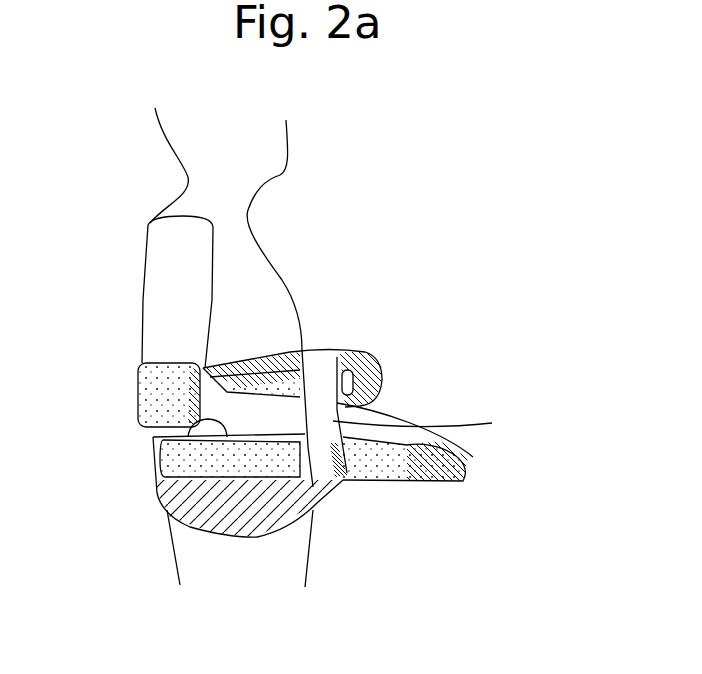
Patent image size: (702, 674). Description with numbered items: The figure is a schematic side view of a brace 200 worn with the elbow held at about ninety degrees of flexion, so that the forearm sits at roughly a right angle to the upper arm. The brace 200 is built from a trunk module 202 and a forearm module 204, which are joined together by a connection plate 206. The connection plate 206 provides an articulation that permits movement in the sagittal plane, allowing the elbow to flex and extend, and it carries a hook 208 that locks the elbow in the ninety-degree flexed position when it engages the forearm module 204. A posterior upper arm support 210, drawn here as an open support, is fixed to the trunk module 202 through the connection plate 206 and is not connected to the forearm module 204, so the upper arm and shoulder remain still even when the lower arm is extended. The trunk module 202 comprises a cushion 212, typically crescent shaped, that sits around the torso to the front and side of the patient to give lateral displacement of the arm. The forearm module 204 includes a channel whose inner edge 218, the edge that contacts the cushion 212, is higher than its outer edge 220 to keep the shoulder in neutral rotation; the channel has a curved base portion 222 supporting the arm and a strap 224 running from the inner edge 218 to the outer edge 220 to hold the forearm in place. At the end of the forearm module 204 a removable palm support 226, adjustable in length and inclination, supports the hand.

The brace 200 is at (400, 195).
The trunk module 202 is at (380, 365).
The forearm module 204 is at (403, 483).
The connection plate 206 is at (157, 482).
The hook 208 is at (380, 378).
The posterior upper arm support 210 is at (163, 387).
The cushion 212 is at (362, 357).
The inner edge of the channel 218 is at (337, 357).
The outer edge of the channel 220 is at (160, 428).
The curved base portion 222 is at (370, 488).
The strap 224 is at (300, 355).
The palm support 226 is at (473, 457).